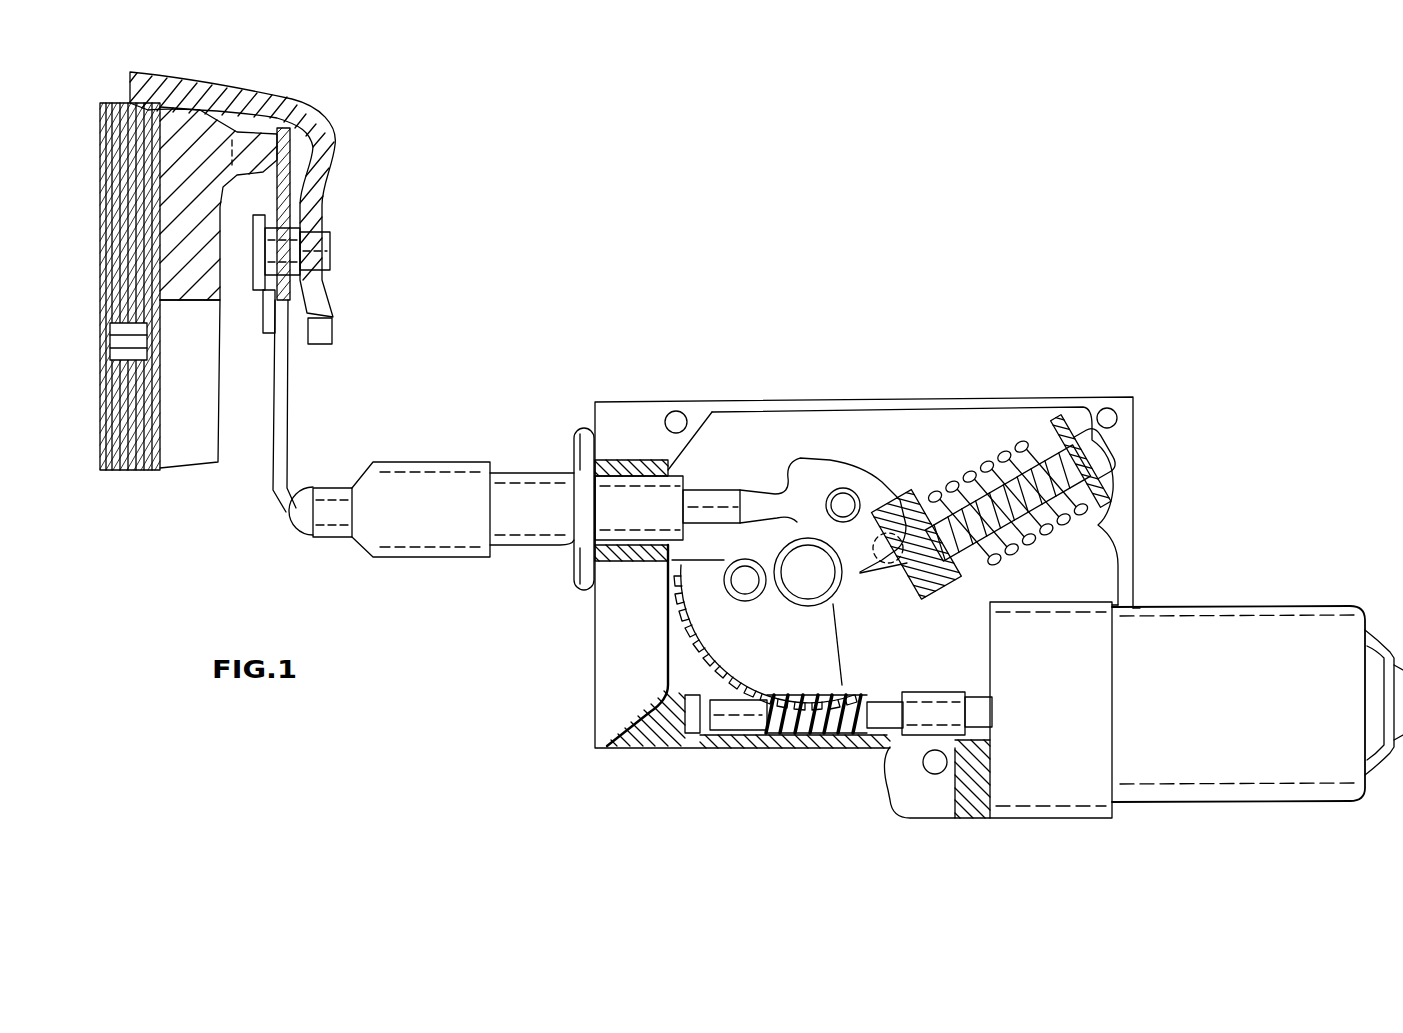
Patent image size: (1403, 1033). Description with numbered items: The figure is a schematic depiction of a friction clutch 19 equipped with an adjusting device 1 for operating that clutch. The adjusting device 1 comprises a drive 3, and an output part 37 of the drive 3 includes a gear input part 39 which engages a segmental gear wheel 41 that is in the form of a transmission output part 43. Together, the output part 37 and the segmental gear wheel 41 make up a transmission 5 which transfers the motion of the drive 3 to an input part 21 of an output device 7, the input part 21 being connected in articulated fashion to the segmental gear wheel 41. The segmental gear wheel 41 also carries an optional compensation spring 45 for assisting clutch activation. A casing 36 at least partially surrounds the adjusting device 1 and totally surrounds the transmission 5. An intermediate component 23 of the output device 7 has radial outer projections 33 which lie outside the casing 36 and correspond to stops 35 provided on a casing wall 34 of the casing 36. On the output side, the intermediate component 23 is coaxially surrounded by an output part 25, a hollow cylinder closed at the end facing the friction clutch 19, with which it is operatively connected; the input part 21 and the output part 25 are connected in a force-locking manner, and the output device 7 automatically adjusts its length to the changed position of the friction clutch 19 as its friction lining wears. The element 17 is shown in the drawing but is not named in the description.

The adjusting device 1 is at (784, 782).
The drive 3 is at (1256, 632).
The transmission 5 is at (858, 686).
The output device 7 is at (529, 456).
The brake lever 17 is at (275, 447).
The friction clutch 19 is at (358, 337).
The input part 21 is at (778, 505).
The intermediate component 23 is at (552, 528).
The output part 25 is at (418, 463).
The radial outer projections 33 is at (604, 448).
The casing wall 34 is at (622, 650).
The stops 35 is at (580, 412).
The casing 36 is at (578, 716).
The output part of drive 37 is at (886, 758).
The gear input part 39 is at (830, 738).
The segmental gear wheel 41 is at (740, 648).
The transmission output part 43 is at (718, 640).
The compensation spring 45 is at (980, 452).